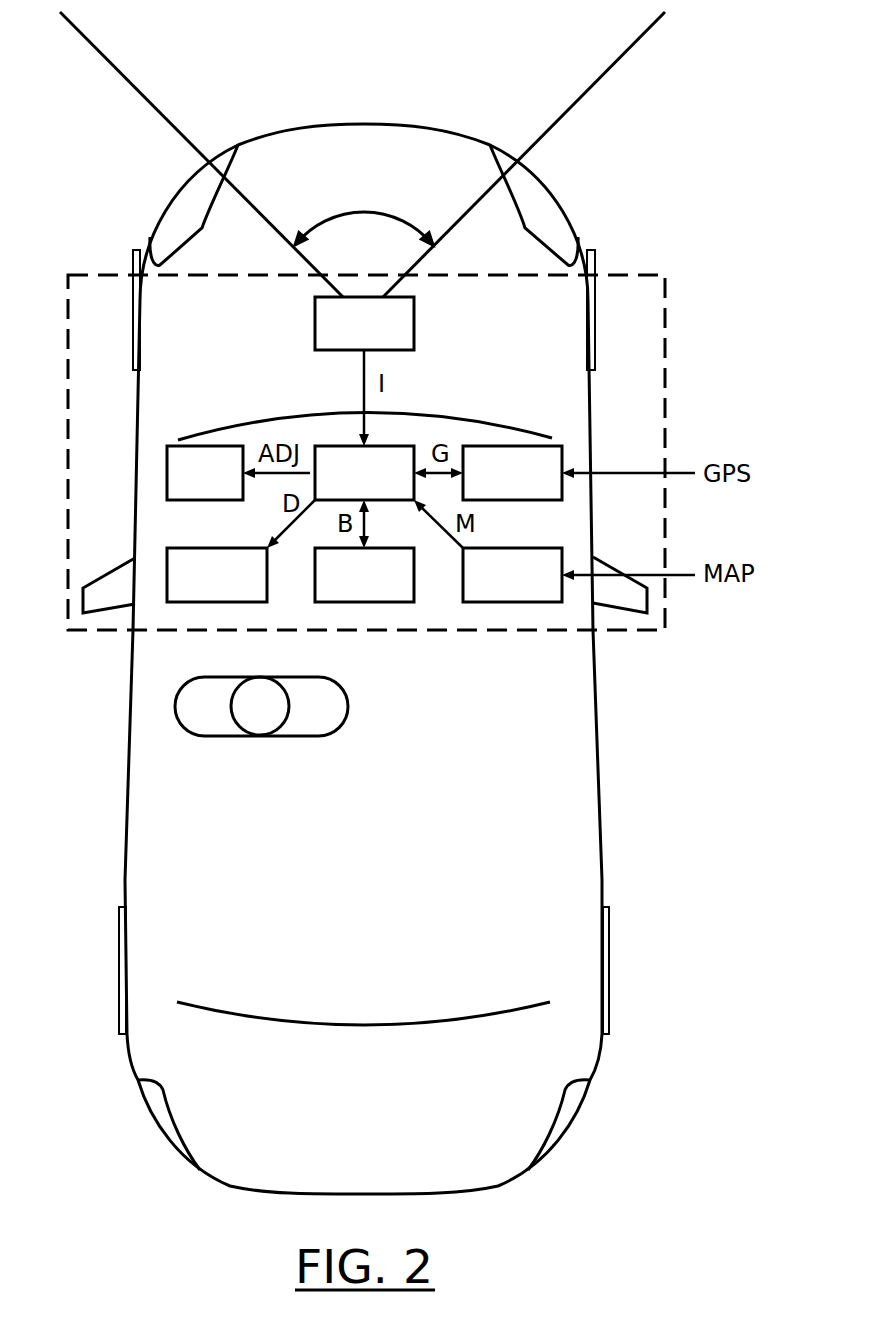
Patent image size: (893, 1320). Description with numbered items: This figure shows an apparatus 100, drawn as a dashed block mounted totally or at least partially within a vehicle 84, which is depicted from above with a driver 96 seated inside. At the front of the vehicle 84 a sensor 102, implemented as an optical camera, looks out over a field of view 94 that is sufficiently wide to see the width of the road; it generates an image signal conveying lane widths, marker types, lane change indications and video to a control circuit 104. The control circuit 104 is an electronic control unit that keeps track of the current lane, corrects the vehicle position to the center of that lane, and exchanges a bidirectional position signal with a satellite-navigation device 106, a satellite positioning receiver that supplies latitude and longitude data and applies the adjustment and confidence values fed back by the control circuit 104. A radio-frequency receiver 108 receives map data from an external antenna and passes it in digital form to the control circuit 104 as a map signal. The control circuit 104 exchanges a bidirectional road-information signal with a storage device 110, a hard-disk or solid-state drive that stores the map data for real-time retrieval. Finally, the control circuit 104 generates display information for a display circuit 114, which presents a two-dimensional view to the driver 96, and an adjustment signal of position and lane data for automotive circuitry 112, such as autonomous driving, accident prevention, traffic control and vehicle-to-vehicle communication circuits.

The vehicle 84 is at (310, 125).
The field of view 94 is at (379, 205).
The driver 96 is at (346, 709).
The apparatus 100 is at (113, 275).
The sensor 102 is at (385, 338).
The control circuit 104 is at (385, 487).
The satellite-navigation device 106 is at (533, 487).
The radio-frequency receiver 108 is at (533, 589).
The storage device 110 is at (385, 589).
The automotive circuitry 112 is at (226, 487).
The display circuit 114 is at (237, 589).